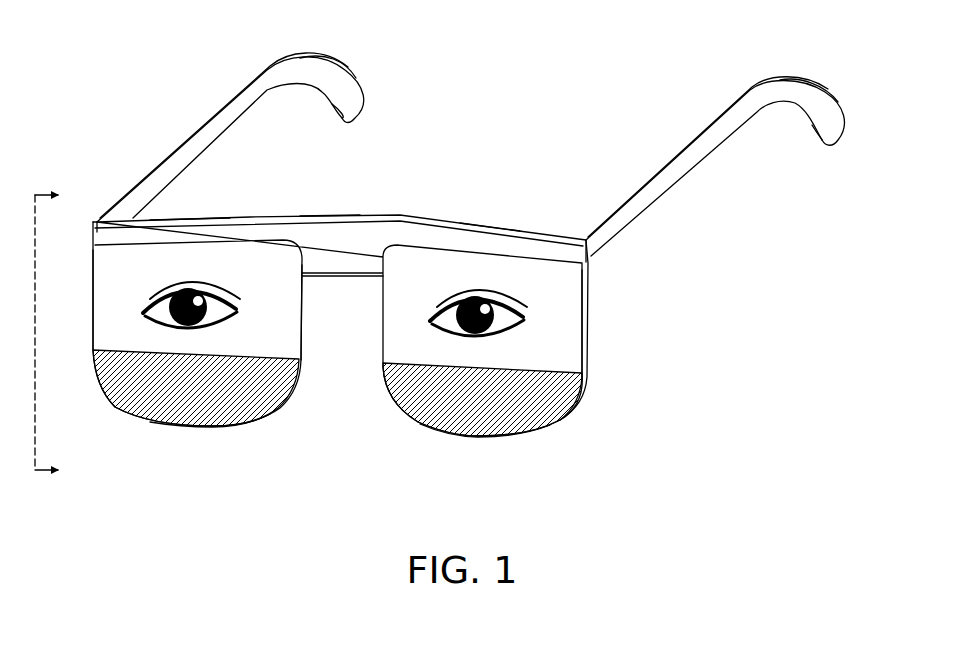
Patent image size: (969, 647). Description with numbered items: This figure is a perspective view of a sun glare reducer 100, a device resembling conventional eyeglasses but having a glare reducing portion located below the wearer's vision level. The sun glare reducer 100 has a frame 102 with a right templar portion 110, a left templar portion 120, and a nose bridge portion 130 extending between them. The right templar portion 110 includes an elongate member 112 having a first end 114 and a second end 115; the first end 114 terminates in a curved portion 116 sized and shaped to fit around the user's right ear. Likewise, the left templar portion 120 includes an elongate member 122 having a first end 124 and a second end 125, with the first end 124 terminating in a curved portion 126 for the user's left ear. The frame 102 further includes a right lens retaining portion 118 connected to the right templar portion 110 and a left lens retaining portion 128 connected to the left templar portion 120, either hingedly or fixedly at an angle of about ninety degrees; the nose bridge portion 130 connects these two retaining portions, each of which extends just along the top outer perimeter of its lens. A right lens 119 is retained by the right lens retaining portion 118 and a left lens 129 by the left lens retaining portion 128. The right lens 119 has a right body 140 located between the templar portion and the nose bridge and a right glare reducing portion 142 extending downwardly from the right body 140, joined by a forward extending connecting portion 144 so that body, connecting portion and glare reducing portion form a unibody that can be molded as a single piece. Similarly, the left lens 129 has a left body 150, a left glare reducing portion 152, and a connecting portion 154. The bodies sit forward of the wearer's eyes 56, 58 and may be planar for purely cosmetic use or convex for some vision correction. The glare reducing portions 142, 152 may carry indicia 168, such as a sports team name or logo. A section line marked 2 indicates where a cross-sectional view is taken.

The sun glare reducer 100 is at (552, 55).
The frame 102 is at (355, 212).
The right templar portion 110 is at (264, 124).
The elongate member 112 is at (208, 122).
The first end 114 is at (352, 58).
The curved portion 116 is at (328, 120).
The second end 115 is at (110, 208).
The right lens retaining portion 118 is at (190, 220).
The right lens 119 is at (300, 313).
The left templar portion 120 is at (739, 148).
The elongate member 122 is at (700, 137).
The first end 124 is at (803, 83).
The curved portion 126 is at (845, 130).
The second end 125 is at (610, 243).
The left lens retaining portion 128 is at (492, 237).
The left lens 129 is at (570, 300).
The nose bridge portion 130 is at (328, 228).
The right body 140 is at (90, 300).
The right glare reducing portion 142 is at (260, 427).
The connecting portion 144 is at (297, 357).
The left body 150 is at (590, 346).
The left glare reducing portion 152 is at (560, 427).
The connecting portion 154 is at (590, 367).
The indicia 168 is at (173, 400).
The wearer's eye 56 is at (170, 282).
The wearer's eye 58 is at (458, 285).
The section line 2- 2 is at (55, 334).